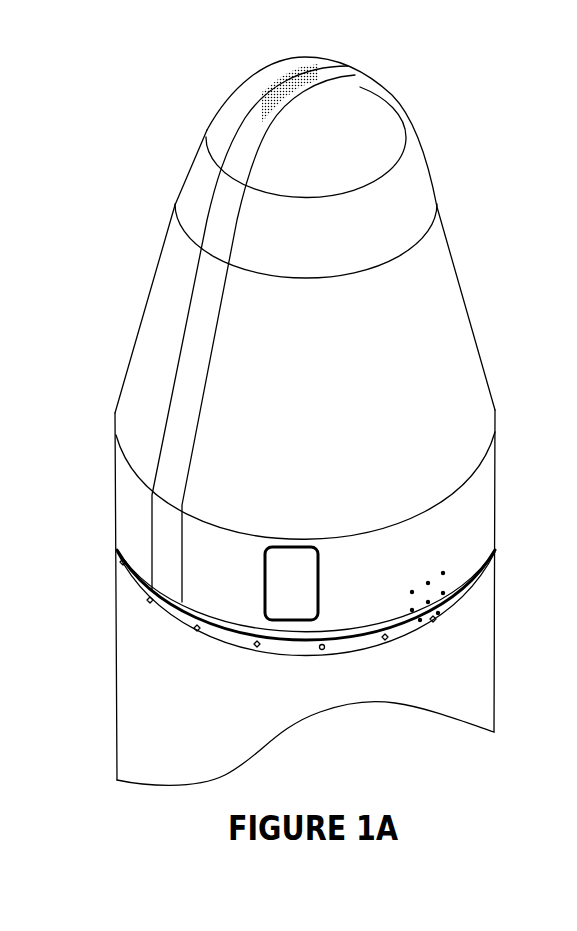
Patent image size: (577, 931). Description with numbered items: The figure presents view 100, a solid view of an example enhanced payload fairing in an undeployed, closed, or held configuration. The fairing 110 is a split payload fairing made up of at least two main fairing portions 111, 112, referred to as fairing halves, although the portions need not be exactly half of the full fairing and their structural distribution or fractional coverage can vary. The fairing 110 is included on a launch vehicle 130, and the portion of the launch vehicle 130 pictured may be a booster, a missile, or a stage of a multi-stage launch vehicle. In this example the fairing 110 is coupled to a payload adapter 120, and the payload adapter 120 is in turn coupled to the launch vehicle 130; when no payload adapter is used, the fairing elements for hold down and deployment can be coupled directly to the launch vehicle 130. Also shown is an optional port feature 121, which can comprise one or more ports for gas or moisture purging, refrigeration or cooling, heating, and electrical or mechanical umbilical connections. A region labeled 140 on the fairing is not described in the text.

The view 100 is at (158, 115).
The fairing 110 is at (479, 333).
The fairing portion 111 is at (168, 317).
The fairing portion 112 is at (405, 383).
The payload adapter 120 is at (429, 636).
The port feature 121 is at (284, 595).
The launch vehicle 130 is at (136, 714).
The stippled patch 140 is at (288, 91).